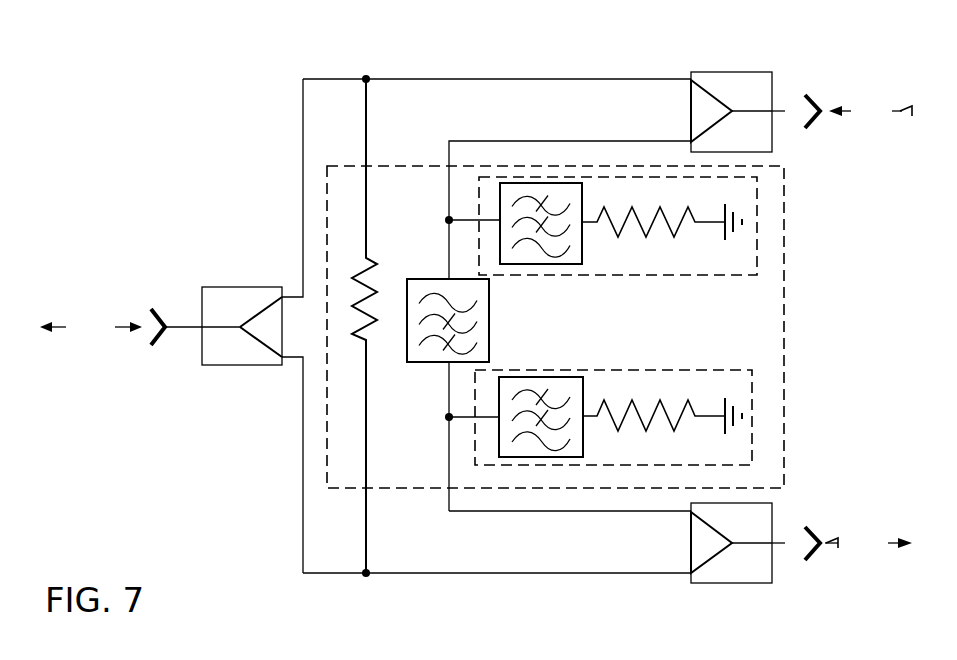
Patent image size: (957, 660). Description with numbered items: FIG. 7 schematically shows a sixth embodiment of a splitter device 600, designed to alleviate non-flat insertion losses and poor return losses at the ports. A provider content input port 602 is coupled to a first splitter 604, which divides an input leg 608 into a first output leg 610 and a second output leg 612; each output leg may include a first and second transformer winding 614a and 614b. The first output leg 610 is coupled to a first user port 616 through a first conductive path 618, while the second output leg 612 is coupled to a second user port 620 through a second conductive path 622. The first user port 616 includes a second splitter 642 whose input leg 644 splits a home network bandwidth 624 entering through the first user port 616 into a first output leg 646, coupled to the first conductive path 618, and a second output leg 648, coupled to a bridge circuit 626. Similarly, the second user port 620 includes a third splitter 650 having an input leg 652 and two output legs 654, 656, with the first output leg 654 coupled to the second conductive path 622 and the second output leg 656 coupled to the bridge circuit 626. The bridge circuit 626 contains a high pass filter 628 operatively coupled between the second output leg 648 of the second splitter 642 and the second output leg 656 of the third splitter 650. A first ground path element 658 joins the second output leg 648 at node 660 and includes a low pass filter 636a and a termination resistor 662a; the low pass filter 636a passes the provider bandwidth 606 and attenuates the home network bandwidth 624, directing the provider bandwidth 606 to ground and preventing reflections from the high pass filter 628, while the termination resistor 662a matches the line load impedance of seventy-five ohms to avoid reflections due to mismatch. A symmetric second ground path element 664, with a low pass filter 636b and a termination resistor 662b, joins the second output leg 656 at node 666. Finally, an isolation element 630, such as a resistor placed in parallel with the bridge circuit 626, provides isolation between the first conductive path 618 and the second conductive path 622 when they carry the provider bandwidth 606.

The splitter device 600 is at (262, 76).
The provider content input port 602 is at (187, 330).
The first splitter 604 is at (202, 300).
The provider bandwidth 606 is at (106, 336).
The input leg 608 is at (226, 330).
The first output leg 610 is at (303, 243).
The second output leg 612 is at (303, 480).
The first transformer winding 614a is at (259, 310).
The second transformer winding 614b is at (261, 345).
The first user port 616 is at (785, 110).
The first conductive path 618 is at (446, 79).
The second user port 620 is at (785, 547).
The second conductive path 622 is at (478, 573).
The home network bandwidth 624 is at (884, 121).
The bridge circuit 626 is at (785, 220).
The high pass filter 628 is at (489, 322).
The isolation element 630 is at (366, 257).
The low pass filter 636a is at (565, 264).
The low pass filter 636b is at (565, 377).
The second splitter 642 is at (723, 72).
The input leg 644 is at (748, 110).
The first output leg 646 is at (612, 79).
The second output leg 648 is at (583, 141).
The third splitter 650 is at (733, 583).
The input leg 652 is at (752, 543).
The first output leg 654 is at (637, 573).
The second output leg 656 is at (602, 512).
The first ground path element 658 is at (703, 275).
The node 660 is at (448, 219).
The termination resistor 662a is at (628, 230).
The termination resistor 662b is at (672, 406).
The second ground path element 664 is at (660, 370).
The node 666 is at (448, 417).